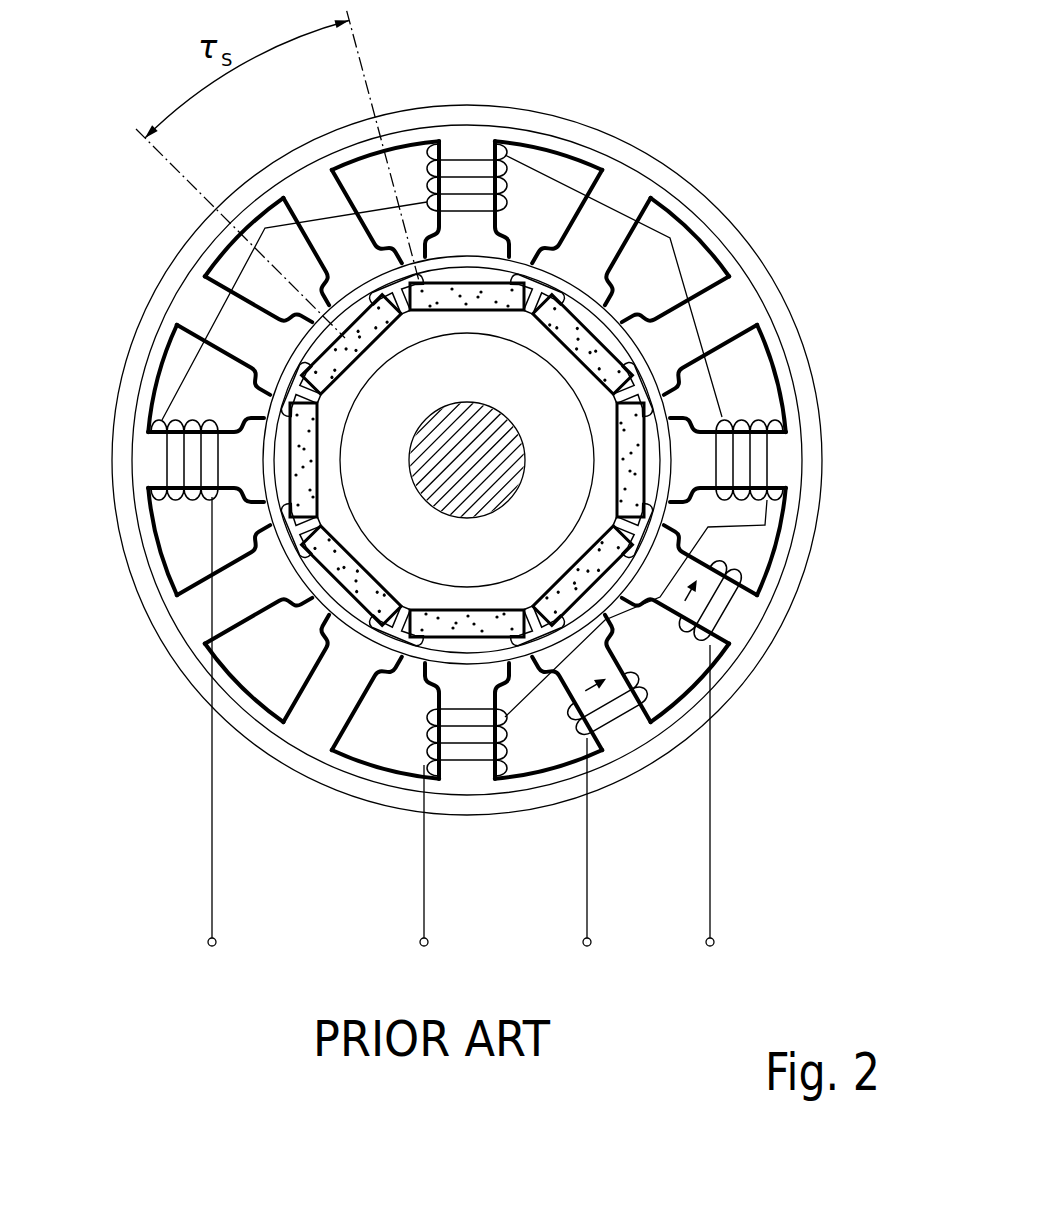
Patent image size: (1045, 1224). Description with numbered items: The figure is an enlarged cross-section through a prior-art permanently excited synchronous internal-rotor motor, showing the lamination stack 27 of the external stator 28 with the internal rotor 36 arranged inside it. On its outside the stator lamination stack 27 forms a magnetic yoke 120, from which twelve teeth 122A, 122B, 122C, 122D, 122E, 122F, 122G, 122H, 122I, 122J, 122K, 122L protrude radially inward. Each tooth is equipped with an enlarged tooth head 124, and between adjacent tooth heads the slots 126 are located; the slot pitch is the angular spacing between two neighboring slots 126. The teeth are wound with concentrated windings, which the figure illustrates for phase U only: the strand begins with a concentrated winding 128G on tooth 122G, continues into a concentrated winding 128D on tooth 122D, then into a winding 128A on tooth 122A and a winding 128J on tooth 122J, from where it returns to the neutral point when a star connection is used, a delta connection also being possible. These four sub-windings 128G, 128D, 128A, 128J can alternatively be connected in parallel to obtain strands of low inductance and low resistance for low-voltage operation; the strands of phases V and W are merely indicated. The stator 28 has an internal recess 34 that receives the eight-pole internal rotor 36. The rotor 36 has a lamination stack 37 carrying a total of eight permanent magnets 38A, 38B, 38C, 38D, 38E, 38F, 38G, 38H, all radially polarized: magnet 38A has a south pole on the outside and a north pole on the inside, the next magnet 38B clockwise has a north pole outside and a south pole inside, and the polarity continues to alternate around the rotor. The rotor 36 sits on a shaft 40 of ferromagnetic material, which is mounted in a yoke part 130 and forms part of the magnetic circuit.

The external stator 28 is at (560, 62).
The lamination stack 27 is at (632, 143).
The magnetic yoke 120 is at (740, 676).
The tooth 122A is at (467, 183).
The tooth 122B is at (609, 185).
The tooth 122C is at (724, 313).
The tooth 122D is at (765, 475).
The tooth 122E is at (724, 637).
The tooth 122F is at (609, 757).
The tooth 122G is at (440, 812).
The tooth 122H is at (269, 757).
The tooth 122I is at (160, 637).
The tooth 122J is at (115, 475).
The tooth 122K is at (162, 313).
The tooth 122L is at (277, 185).
The enlarged tooth head 124 is at (447, 252).
The slot 126 is at (300, 290).
The concentrated winding 128A is at (428, 165).
The concentrated winding 128D is at (752, 425).
The concentrated winding 128G is at (512, 752).
The concentrated winding 128J is at (181, 498).
The internal recess 34 is at (522, 256).
The internal rotor 36 is at (310, 618).
The lamination stack 37 is at (490, 383).
The permanent magnet 38A is at (432, 310).
The permanent magnet 38B is at (572, 362).
The permanent magnet 38C is at (610, 475).
The permanent magnet 38D is at (563, 560).
The permanent magnet 38E is at (447, 605).
The permanent magnet 38F is at (358, 545).
The permanent magnet 38G is at (322, 480).
The permanent magnet 38H is at (368, 365).
The shaft 40 is at (422, 453).
The yoke part 130 is at (488, 317).